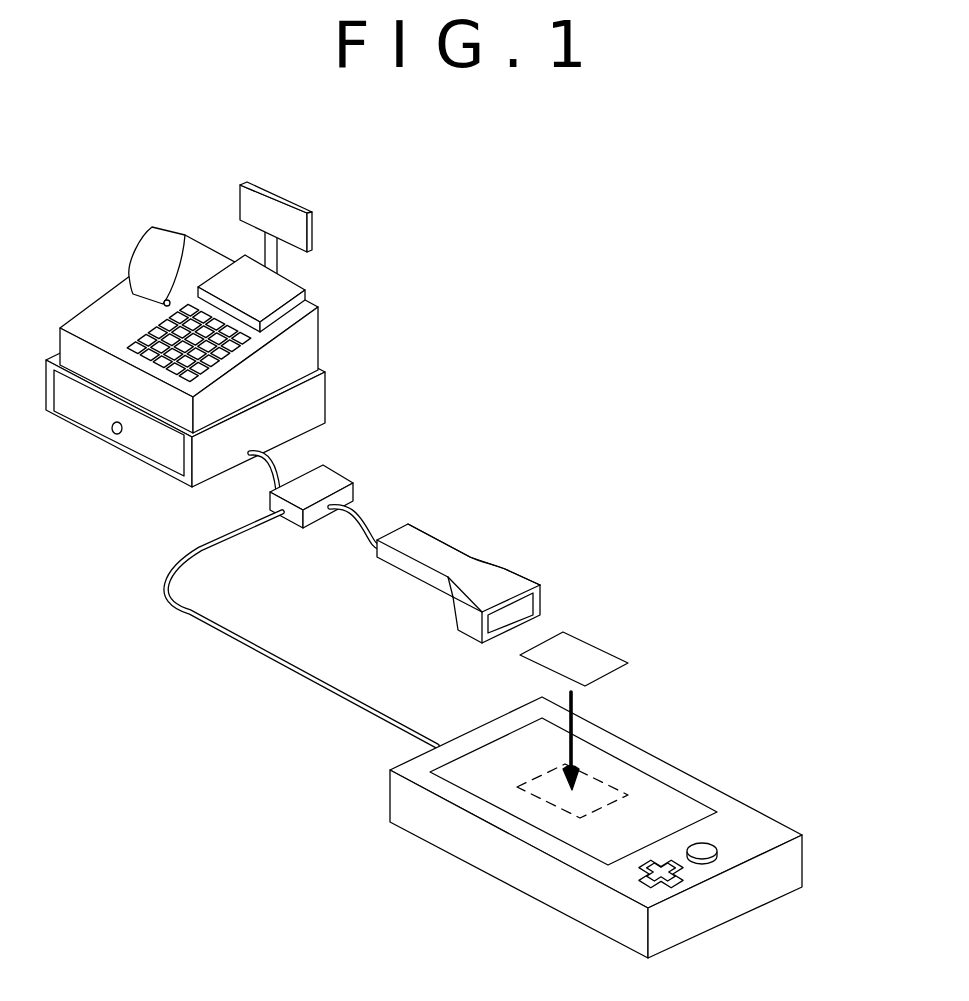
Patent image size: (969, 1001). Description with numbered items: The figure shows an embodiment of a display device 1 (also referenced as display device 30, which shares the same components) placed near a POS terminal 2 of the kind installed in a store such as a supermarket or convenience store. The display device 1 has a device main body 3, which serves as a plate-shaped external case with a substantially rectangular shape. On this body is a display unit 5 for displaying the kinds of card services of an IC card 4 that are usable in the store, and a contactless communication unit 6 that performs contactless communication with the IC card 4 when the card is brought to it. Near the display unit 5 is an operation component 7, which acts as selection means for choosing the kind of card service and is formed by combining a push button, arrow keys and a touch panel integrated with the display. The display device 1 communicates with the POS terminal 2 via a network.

The display device 1 is at (624, 784).
The display device 30 is at (624, 830).
The POS terminal 2 is at (342, 283).
The device main body 3 is at (760, 898).
The IC card 4 is at (572, 647).
The display unit 5 is at (665, 797).
The contactless communication unit 6 is at (547, 802).
The operation component 7 is at (705, 858).